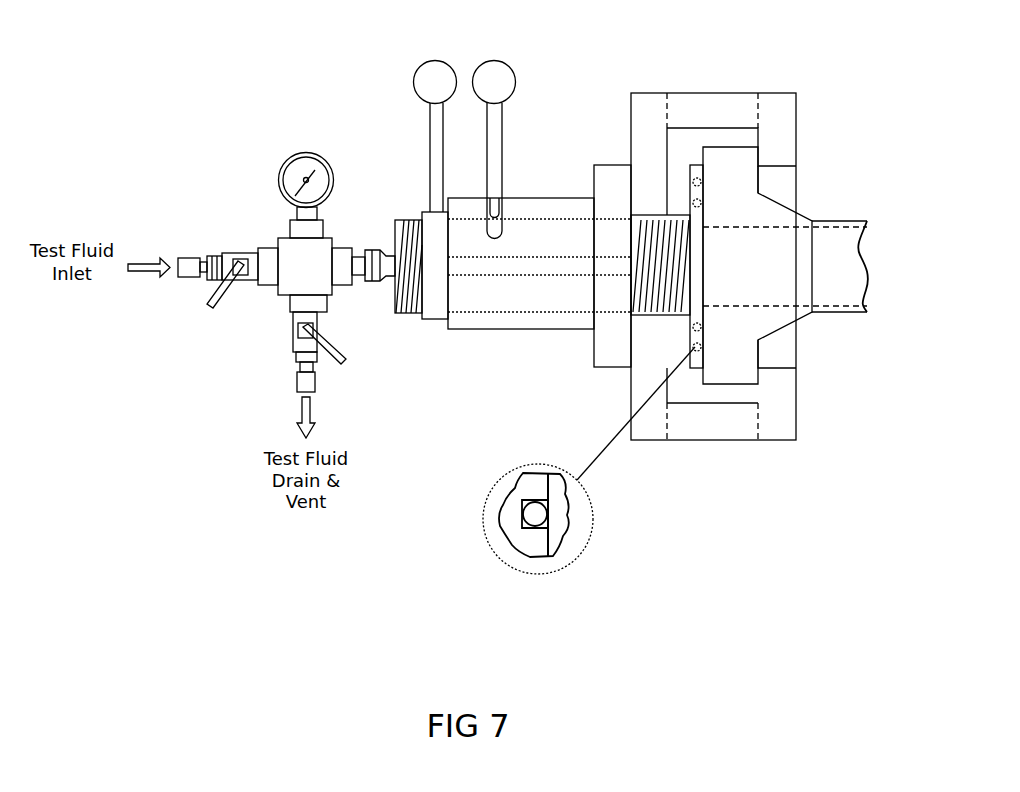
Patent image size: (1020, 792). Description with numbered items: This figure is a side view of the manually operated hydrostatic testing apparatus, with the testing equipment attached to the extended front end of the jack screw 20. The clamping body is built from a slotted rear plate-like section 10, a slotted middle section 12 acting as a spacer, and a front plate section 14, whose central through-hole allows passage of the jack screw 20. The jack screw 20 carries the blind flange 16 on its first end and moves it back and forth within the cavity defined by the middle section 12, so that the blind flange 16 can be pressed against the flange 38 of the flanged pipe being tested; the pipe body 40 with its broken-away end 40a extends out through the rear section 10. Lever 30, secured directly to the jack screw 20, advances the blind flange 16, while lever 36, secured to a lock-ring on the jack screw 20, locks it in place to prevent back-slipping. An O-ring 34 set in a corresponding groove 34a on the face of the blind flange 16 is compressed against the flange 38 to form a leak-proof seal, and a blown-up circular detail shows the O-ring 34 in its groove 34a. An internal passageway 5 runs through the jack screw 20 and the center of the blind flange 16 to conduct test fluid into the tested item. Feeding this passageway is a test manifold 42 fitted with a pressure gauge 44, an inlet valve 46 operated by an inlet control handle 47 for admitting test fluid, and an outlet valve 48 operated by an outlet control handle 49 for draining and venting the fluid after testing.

The internal passageway 5 is at (467, 274).
The slotted rear plate-like section 10 is at (797, 98).
The slotted middle section 12 is at (738, 442).
The front plate section 14 is at (648, 442).
The blind flange 16 is at (697, 368).
The jack screw 20 is at (407, 313).
The lever 30 is at (500, 60).
The O-ring 34 is at (694, 181).
The groove 34a is at (520, 528).
The lever 36 is at (430, 60).
The flange 38 is at (738, 238).
The pipe 40 is at (842, 313).
The pipe end 40a is at (858, 313).
The test manifold 42 is at (278, 297).
The pressure gauge 44 is at (290, 150).
The inlet valve 46 is at (188, 257).
The inlet control handle 47 is at (207, 306).
The outlet valve 48 is at (315, 387).
The outlet control handle 49 is at (347, 363).